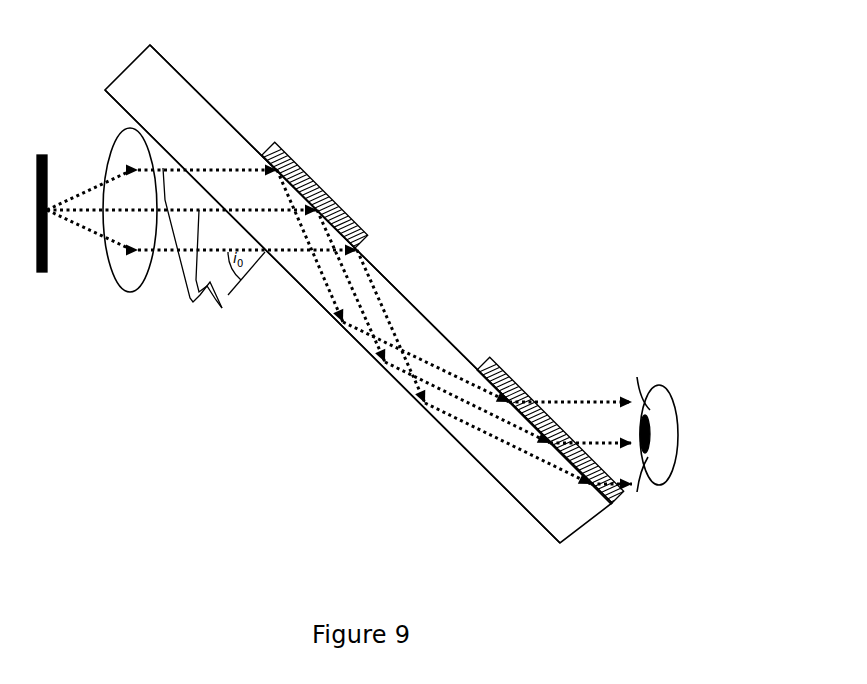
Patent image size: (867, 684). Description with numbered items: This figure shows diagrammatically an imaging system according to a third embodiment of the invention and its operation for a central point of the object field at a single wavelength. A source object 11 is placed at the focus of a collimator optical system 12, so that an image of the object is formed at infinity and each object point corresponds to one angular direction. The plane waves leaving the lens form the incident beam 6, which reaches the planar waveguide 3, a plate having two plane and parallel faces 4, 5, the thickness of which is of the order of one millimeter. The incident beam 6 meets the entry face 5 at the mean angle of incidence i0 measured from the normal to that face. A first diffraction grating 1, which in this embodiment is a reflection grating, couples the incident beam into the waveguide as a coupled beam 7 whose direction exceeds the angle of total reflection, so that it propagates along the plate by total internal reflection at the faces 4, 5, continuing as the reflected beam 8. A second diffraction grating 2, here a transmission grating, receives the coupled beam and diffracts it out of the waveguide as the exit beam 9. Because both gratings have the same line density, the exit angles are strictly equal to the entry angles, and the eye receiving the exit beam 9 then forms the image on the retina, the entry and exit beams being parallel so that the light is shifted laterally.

The first diffraction grating 1 is at (330, 198).
The second diffraction grating 2 is at (508, 368).
The planar waveguide 3 is at (130, 63).
The face of the waveguide 4 is at (542, 522).
The entry face of the waveguide 5 is at (378, 273).
The incident beam 6 is at (192, 251).
The coupled beam 7 is at (352, 294).
The propagating beam 8 is at (490, 417).
The exit beam 9 is at (628, 482).
The source object 11 is at (47, 234).
The collimator optical system 12 is at (130, 228).